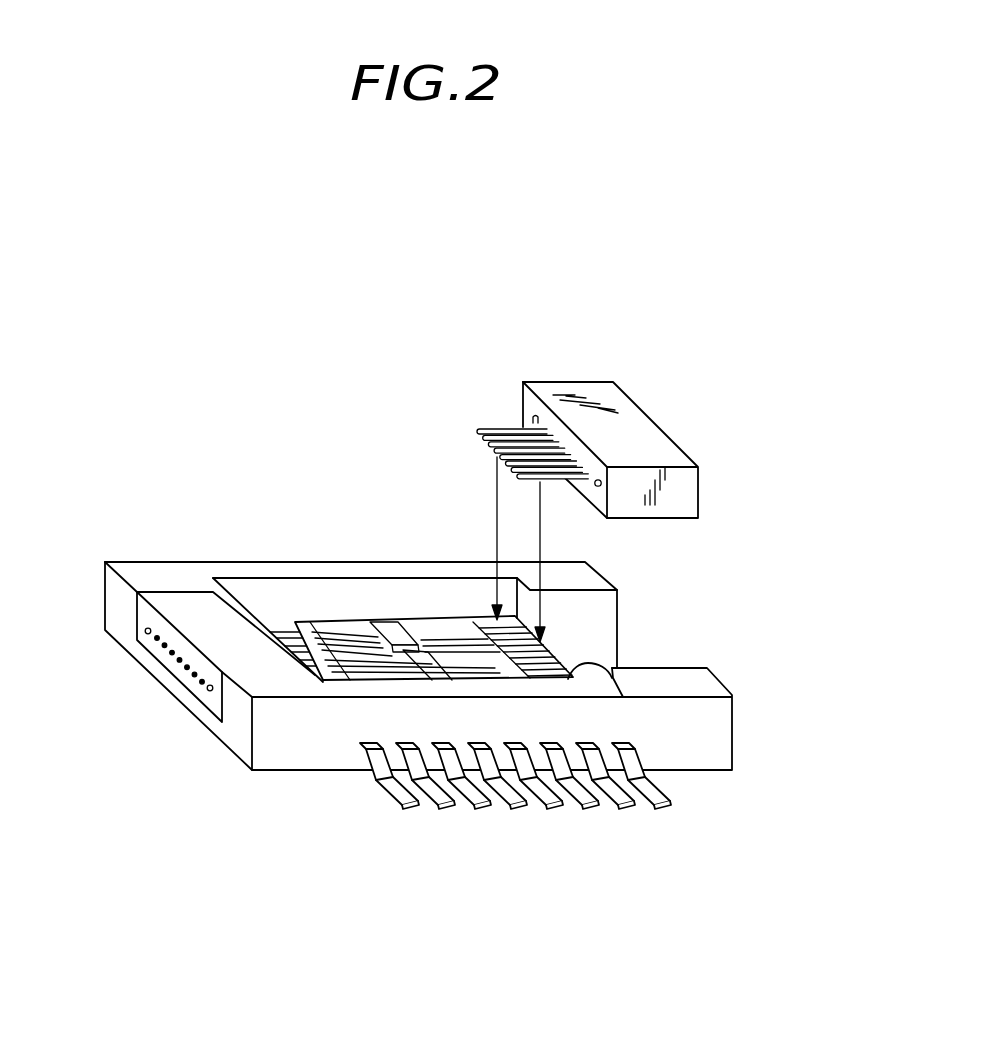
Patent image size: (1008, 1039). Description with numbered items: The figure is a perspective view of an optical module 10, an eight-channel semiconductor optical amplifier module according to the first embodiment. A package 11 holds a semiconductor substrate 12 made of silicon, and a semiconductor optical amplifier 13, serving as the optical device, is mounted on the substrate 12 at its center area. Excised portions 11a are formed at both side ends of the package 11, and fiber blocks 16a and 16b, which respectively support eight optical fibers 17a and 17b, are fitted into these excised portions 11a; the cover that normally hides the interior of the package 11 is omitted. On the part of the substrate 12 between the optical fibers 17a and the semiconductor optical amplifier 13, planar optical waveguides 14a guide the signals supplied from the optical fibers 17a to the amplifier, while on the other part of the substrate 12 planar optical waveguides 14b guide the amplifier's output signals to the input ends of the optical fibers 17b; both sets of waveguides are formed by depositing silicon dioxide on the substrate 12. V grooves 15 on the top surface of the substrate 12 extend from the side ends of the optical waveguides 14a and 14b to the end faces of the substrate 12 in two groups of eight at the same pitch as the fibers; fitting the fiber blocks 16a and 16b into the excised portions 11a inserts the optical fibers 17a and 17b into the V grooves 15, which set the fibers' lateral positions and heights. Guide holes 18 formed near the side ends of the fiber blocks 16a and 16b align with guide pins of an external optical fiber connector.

The optical module 10 is at (230, 430).
The package 11 is at (268, 762).
The excised portion 11a is at (622, 657).
The semiconductor substrate 12 is at (417, 627).
The semiconductor optical amplifier 13 is at (437, 678).
The optical waveguide 14a is at (454, 625).
The optical waveguide 14b is at (354, 625).
The V groove 15 is at (620, 695).
The fiber block 16a is at (635, 427).
The fiber block 16b is at (183, 607).
The optical fiber 17a is at (487, 427).
The optical fiber 17b is at (330, 678).
The guide hole 18 is at (148, 634).